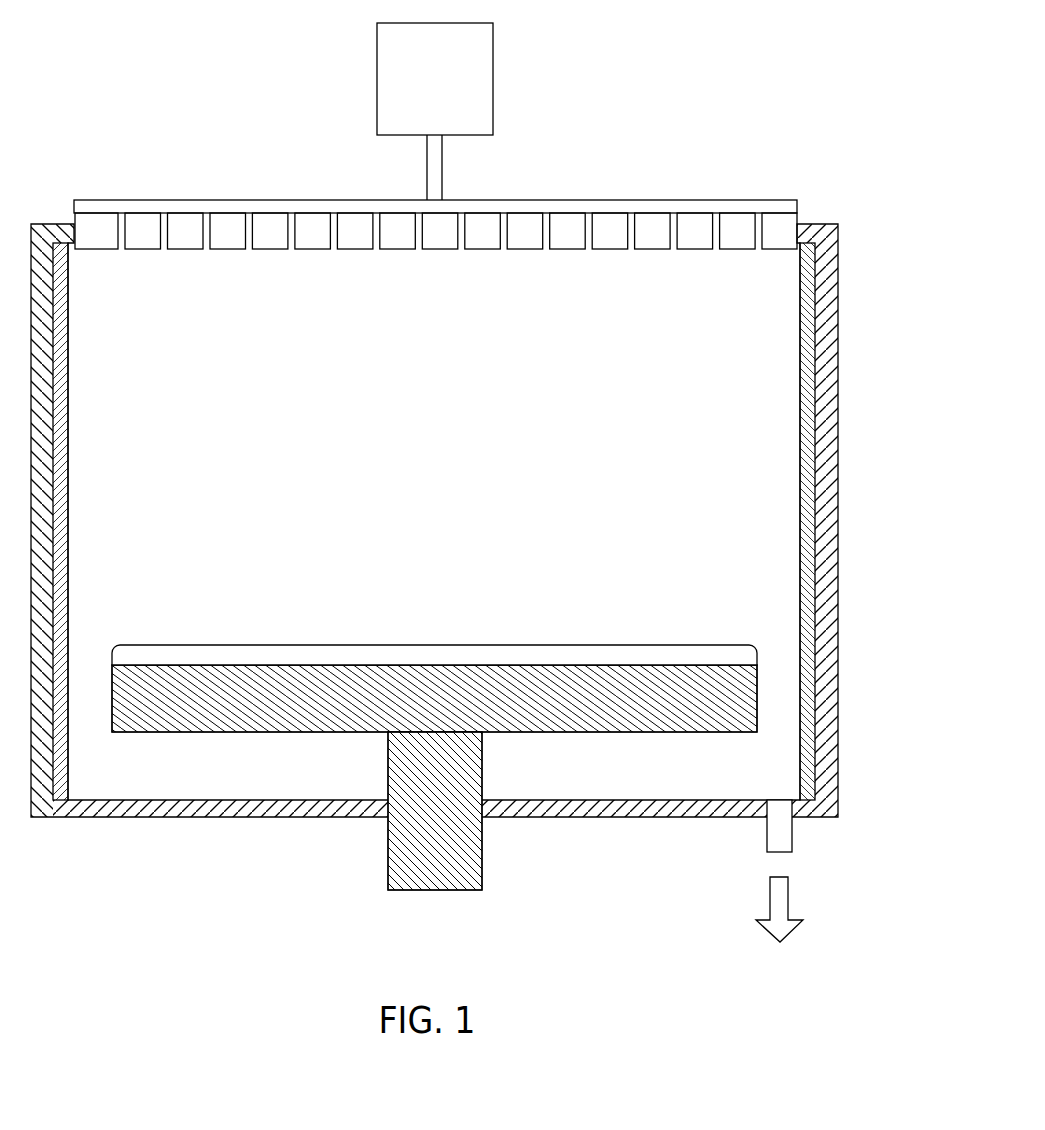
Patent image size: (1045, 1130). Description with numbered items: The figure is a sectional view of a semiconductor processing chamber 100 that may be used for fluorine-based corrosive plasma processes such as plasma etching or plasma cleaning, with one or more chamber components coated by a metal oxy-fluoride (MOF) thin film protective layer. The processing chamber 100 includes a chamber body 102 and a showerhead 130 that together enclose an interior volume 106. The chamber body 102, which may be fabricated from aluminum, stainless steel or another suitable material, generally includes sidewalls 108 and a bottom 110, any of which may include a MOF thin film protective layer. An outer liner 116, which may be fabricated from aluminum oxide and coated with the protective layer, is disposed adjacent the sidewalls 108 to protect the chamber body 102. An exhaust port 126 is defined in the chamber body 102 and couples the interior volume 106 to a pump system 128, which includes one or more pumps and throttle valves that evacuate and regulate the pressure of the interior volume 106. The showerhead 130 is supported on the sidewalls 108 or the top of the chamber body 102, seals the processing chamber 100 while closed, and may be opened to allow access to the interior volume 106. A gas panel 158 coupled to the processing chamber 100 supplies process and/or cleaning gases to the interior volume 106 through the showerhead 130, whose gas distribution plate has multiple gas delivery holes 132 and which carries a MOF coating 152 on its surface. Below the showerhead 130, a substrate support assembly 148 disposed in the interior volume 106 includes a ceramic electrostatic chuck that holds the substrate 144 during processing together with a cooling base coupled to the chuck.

The processing chamber 100 is at (489, 501).
The chamber body 102 is at (489, 520).
The interior volume 106 is at (693, 356).
The sidewalls 108 is at (830, 473).
The bottom 110 is at (162, 815).
The outer liner 116 is at (800, 413).
The exhaust port 126 is at (763, 825).
The pump system 128 is at (755, 979).
The showerhead 130 is at (435, 240).
The gas delivery holes 132 is at (212, 230).
The substrate 144 is at (293, 645).
The substrate support assembly 148 is at (510, 748).
The MOF coating 152 is at (260, 250).
The gas panel 158 is at (415, 91).